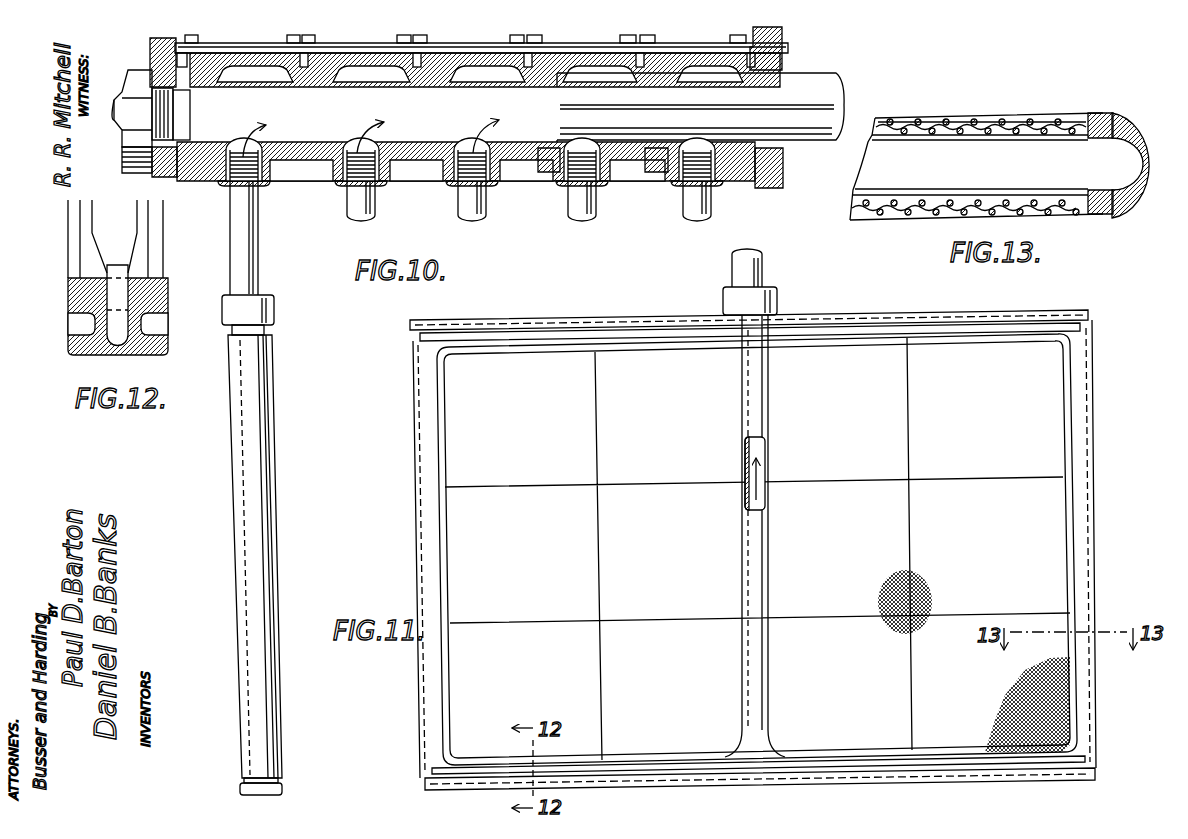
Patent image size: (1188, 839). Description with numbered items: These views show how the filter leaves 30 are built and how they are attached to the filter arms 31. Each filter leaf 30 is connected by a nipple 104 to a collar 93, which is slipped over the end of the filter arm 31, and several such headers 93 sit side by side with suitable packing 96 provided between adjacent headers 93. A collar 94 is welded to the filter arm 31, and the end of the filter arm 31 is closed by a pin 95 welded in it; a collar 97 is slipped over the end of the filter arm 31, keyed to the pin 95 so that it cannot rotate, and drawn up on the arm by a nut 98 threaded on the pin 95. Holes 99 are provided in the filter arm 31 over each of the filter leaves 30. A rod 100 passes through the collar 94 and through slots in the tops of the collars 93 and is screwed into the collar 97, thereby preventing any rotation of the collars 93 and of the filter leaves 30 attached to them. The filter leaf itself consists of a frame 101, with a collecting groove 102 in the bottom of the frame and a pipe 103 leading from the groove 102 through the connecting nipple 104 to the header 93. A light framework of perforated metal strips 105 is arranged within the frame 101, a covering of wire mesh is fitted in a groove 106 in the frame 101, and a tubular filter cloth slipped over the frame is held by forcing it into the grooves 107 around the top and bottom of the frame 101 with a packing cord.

In FIG. 11, the filter leaf 30 is at (270, 420).
In FIG. 10, the filter arm 31 is at (801, 80).
In FIG. 10, the collar 93 is at (272, 184).
In FIG. 10, the collar 94 is at (783, 183).
In FIG. 10, the pin 95 is at (172, 98).
In FIG. 10, the packing 96 is at (662, 173).
In FIG. 10, the collar 97 is at (167, 176).
In FIG. 10, the nut 98 is at (130, 167).
In FIG. 10, the hole 99 is at (353, 140).
In FIG. 10, the rod 100 is at (341, 50).
In FIG. 13, the frame 101 is at (1143, 200).
In FIG. 12, the frame 101 is at (164, 350).
In FIG. 11, the frame 101 is at (1087, 310).
In FIG. 12, the collecting groove 102 is at (117, 337).
In FIG. 11, the pipe 103 is at (770, 399).
In FIG. 10, the nipple 104 is at (261, 230).
In FIG. 11, the nipple 104 is at (764, 274).
In FIG. 11, the perforated metal strip 105 is at (624, 480).
In FIG. 13, the groove 106 is at (1097, 123).
In FIG. 12, the groove 107 is at (82, 323).
In FIG. 11, the groove 107 is at (1081, 321).